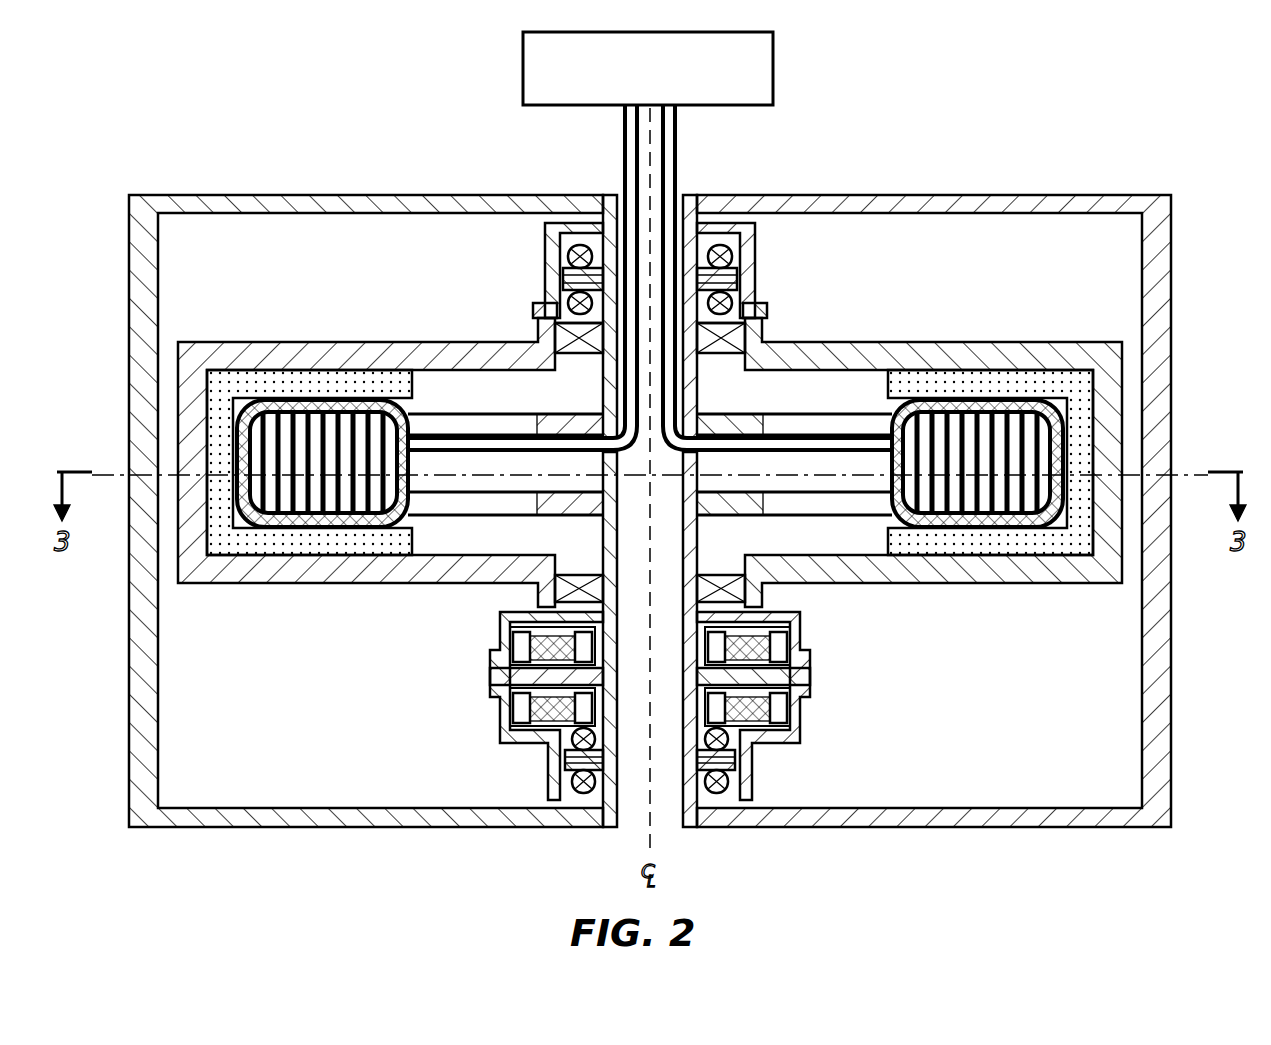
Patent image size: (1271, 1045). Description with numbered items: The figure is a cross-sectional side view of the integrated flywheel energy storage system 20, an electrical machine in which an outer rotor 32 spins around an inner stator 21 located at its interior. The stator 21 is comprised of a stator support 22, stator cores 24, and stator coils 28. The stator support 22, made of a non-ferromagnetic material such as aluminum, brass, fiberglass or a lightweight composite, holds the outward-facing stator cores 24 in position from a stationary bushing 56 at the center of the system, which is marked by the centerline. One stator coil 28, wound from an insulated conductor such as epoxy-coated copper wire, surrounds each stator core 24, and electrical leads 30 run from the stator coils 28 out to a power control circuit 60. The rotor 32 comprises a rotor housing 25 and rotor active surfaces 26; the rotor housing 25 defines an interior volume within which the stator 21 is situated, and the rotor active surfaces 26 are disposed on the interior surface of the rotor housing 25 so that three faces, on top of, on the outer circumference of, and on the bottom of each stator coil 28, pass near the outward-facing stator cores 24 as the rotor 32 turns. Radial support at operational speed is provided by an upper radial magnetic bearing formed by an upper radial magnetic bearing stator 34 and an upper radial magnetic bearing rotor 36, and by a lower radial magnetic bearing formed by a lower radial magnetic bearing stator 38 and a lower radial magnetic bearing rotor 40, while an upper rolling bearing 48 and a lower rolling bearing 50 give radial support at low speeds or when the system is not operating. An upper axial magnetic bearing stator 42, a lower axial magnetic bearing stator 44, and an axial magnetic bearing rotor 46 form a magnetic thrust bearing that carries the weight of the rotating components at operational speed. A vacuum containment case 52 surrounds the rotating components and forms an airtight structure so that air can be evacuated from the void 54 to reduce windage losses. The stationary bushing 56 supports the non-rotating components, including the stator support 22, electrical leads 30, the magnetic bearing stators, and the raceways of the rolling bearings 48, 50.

The integrated flywheel energy storage system 20 is at (643, 513).
The inner stator 21 is at (443, 386).
The stator support 22 is at (897, 350).
The stator core 24 is at (970, 443).
The rotor housing 25 is at (835, 427).
The rotor active surfaces 26 is at (1018, 390).
The stator coil 28 is at (1053, 408).
The electrical leads 30 is at (622, 178).
The rotor 32 is at (960, 316).
The upper radial magnetic bearing stator 34 is at (730, 237).
The upper radial magnetic bearing rotor 36 is at (740, 335).
The lower radial magnetic bearing stator 38 is at (732, 772).
The lower radial magnetic bearing rotor 40 is at (750, 768).
The upper axial magnetic bearing stator 42 is at (492, 648).
The lower axial magnetic bearing stator 44 is at (500, 743).
The axial magnetic bearing rotor 46 is at (805, 683).
The upper rolling bearing 48 is at (822, 350).
The lower rolling bearing 50 is at (545, 585).
The vacuum containment case 52 is at (925, 826).
The void 54 is at (965, 680).
The stationary bushing 56 is at (622, 778).
The power control circuit 60 is at (668, 83).